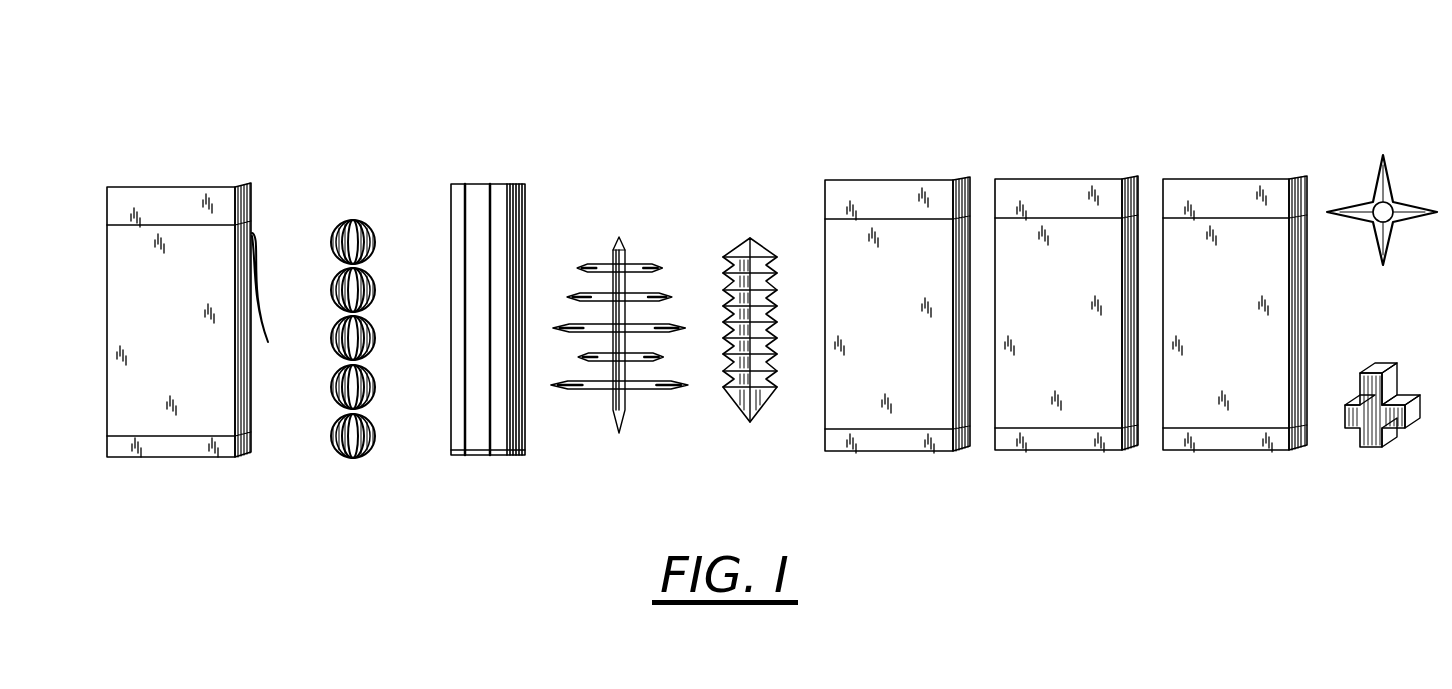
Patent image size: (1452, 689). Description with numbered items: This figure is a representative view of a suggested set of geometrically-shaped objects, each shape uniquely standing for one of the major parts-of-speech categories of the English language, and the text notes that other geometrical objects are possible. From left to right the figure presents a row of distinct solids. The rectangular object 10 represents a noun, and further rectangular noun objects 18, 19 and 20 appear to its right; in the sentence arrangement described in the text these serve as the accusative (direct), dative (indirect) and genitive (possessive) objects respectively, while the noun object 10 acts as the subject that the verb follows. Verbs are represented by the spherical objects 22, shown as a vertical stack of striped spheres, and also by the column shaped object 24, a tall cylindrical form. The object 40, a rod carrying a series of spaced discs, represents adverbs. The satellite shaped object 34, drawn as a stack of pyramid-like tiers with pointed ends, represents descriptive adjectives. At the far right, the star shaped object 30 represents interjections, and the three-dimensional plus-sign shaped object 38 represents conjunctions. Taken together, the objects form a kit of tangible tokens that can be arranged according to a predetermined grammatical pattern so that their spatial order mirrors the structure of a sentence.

The rectangular object 10 is at (187, 262).
The spherical object 22 is at (353, 283).
The column shaped object 24 is at (454, 364).
The adverb object 40 is at (619, 279).
The satellite shaped object 34 is at (749, 270).
The noun object 19 is at (897, 256).
The rectangular object 18 is at (1066, 255).
The noun object 20 is at (1235, 255).
The star shaped object 30 is at (1382, 161).
The plus-sign shaped object 38 is at (1361, 452).